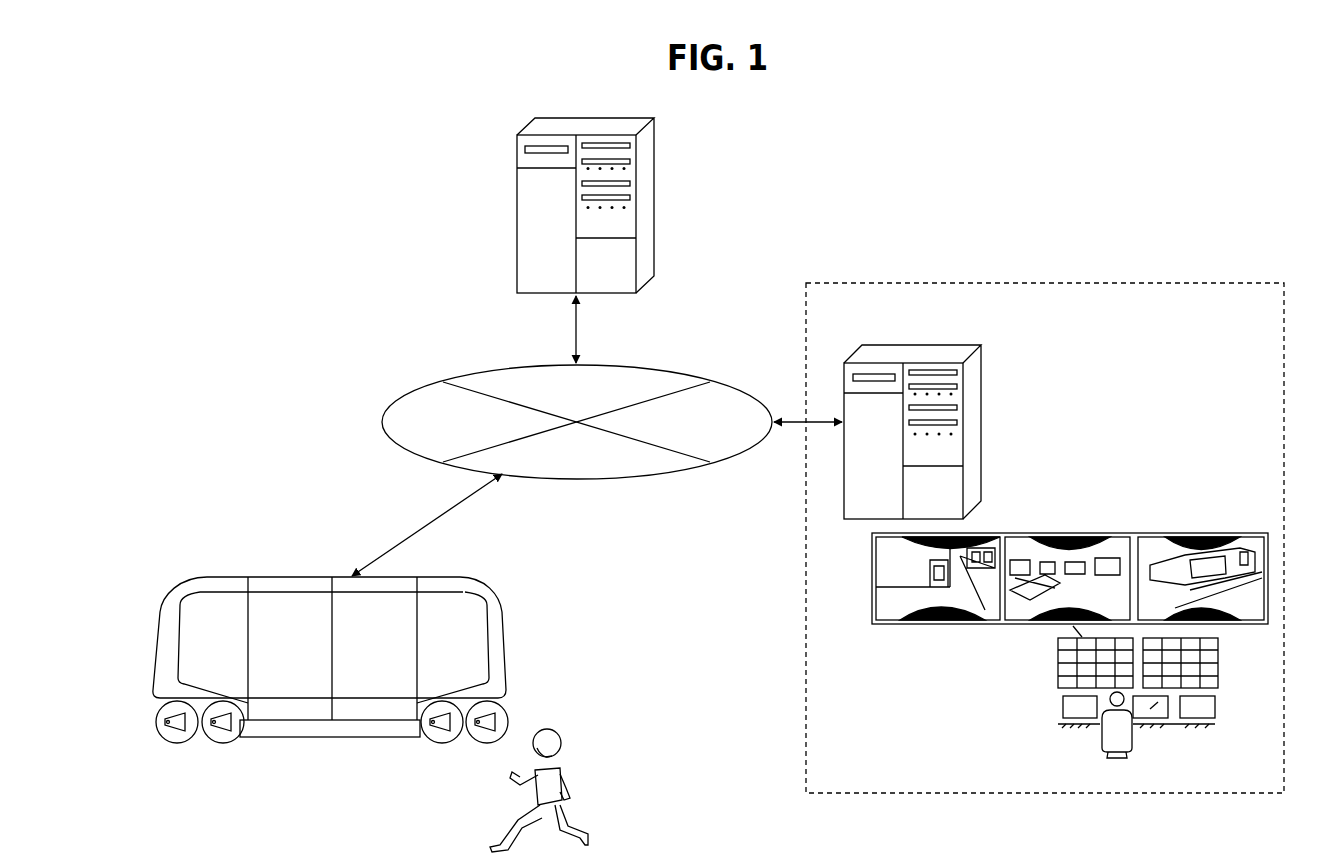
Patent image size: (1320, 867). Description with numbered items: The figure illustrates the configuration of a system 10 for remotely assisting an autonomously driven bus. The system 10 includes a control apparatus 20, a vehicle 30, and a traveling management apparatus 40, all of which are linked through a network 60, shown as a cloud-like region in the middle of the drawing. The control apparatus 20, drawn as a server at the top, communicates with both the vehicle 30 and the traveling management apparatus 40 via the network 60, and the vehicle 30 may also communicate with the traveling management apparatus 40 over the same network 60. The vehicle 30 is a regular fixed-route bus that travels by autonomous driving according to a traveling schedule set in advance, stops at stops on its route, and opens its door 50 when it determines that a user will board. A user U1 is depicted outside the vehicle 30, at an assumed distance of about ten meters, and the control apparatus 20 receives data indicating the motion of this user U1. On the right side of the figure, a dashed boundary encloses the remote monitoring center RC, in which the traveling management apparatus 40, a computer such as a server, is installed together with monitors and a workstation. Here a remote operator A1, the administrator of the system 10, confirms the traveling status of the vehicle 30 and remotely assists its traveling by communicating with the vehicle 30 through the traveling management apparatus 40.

The system 10 is at (272, 224).
The control apparatus 20 is at (655, 195).
The vehicle 30 is at (330, 659).
The traveling management apparatus 40 is at (925, 342).
The door 50 is at (298, 718).
The network 60 is at (400, 396).
The remote monitoring center RC is at (1080, 278).
The user U1 is at (575, 780).
The remote operator A1 is at (1106, 738).